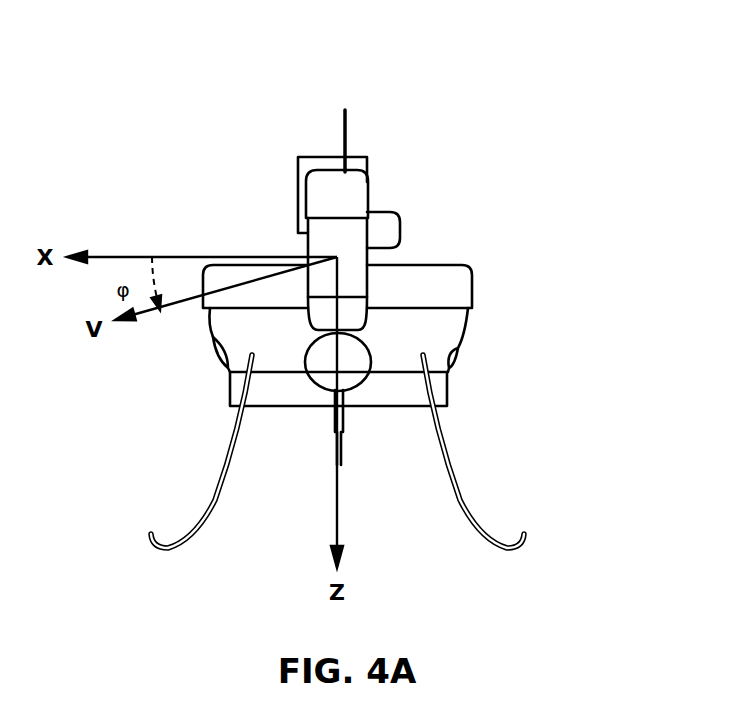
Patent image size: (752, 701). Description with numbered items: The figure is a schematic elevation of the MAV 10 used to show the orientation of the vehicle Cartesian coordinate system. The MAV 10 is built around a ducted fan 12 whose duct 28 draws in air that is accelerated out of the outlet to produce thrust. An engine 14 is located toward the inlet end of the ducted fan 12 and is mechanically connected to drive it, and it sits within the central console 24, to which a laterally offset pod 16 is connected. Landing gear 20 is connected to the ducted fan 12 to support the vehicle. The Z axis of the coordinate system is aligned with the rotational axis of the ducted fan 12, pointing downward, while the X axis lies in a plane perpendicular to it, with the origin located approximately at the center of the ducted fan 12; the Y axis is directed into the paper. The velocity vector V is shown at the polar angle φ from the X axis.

The MAV 10 is at (476, 102).
The ducted fan 12 is at (512, 318).
The engine 14 is at (410, 209).
The pod 16 is at (368, 180).
The landing gear 20 is at (215, 480).
The central console 24 is at (298, 157).
The duct 28 is at (212, 335).